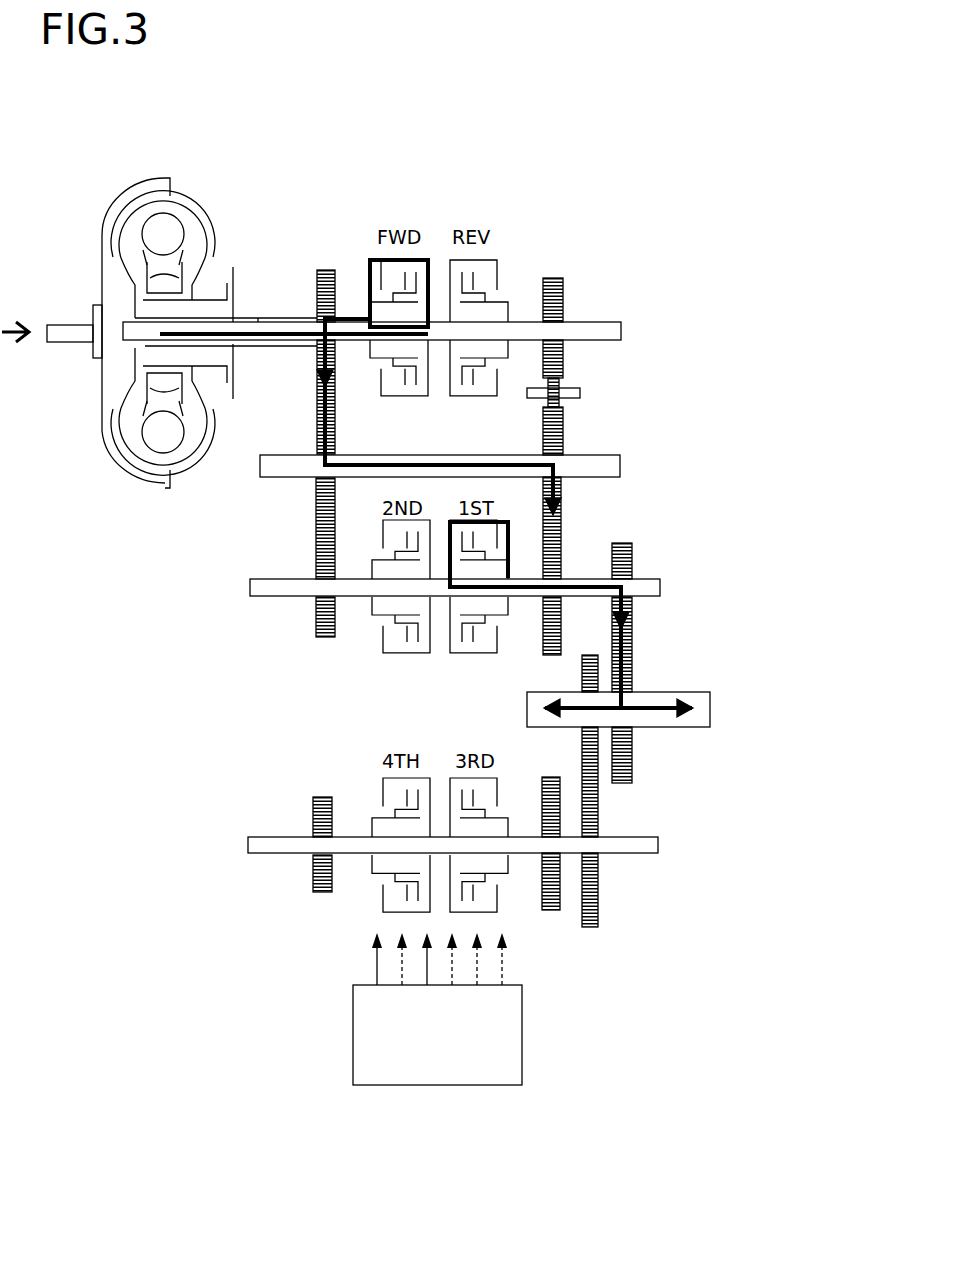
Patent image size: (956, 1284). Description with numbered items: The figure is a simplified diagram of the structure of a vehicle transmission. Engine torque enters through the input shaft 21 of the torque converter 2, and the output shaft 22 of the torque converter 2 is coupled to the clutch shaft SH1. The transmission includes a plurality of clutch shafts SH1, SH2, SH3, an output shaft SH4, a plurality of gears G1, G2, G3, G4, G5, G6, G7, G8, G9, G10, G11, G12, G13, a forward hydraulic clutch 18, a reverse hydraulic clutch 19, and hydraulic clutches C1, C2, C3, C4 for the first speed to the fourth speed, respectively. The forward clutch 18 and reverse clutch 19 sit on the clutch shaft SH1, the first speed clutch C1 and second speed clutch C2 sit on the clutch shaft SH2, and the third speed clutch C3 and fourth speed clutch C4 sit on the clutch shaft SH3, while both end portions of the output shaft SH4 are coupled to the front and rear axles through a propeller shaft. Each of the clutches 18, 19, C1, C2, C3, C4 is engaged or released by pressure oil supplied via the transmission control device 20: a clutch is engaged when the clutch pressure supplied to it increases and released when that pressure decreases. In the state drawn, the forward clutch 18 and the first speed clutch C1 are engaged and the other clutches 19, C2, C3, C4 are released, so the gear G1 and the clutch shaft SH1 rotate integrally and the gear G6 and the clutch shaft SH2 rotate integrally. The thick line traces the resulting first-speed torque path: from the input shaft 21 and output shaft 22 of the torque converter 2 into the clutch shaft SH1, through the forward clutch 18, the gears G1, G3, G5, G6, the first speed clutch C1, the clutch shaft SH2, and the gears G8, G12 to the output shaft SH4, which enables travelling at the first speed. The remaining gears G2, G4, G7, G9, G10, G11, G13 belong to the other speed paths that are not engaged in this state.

The torque converter 2 is at (166, 176).
The forward clutch 18 is at (368, 272).
The reverse clutch 19 is at (503, 275).
The transmission control device 20 is at (440, 1085).
The input shaft 21 is at (63, 323).
The output shaft 22 is at (258, 318).
The gear G1 is at (316, 283).
The gear G2 is at (558, 280).
The gear G3 is at (317, 405).
The gear G4 is at (570, 384).
The gear G5 is at (566, 428).
The gear G6 is at (563, 522).
The gear G7 is at (315, 565).
The gear G8 is at (633, 555).
The gear G9 is at (550, 912).
The gear G10 is at (324, 797).
The gear G11 is at (598, 910).
The gear G12 is at (633, 668).
The gear G13 is at (582, 745).
The clutch shaft SH1 is at (623, 326).
The clutch shaft SH2 is at (653, 583).
The clutch shaft SH3 is at (648, 836).
The output shaft SH4 is at (700, 692).
The first speed clutch C1 is at (480, 657).
The second speed clutch C2 is at (387, 657).
The third speed clutch C3 is at (458, 912).
The fourth speed clutch C4 is at (380, 778).